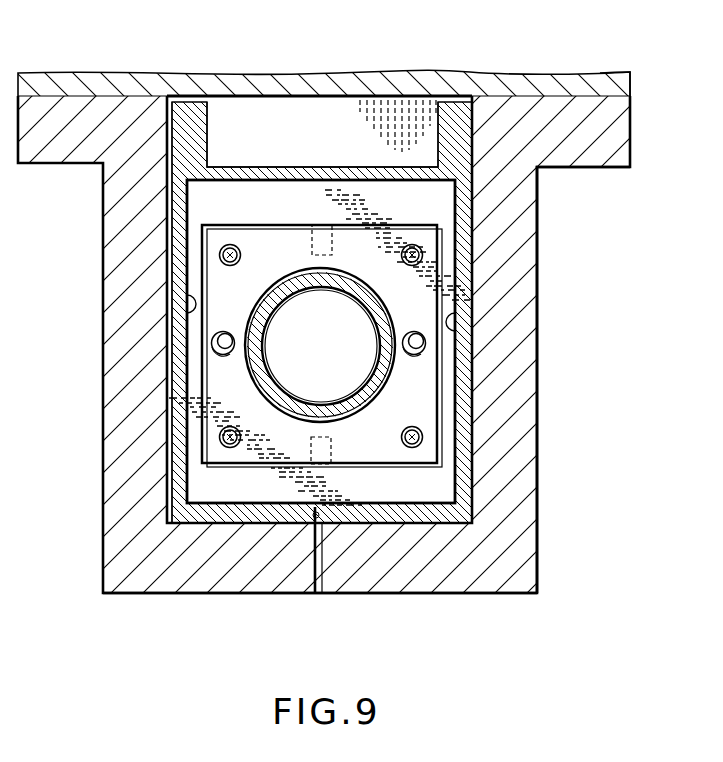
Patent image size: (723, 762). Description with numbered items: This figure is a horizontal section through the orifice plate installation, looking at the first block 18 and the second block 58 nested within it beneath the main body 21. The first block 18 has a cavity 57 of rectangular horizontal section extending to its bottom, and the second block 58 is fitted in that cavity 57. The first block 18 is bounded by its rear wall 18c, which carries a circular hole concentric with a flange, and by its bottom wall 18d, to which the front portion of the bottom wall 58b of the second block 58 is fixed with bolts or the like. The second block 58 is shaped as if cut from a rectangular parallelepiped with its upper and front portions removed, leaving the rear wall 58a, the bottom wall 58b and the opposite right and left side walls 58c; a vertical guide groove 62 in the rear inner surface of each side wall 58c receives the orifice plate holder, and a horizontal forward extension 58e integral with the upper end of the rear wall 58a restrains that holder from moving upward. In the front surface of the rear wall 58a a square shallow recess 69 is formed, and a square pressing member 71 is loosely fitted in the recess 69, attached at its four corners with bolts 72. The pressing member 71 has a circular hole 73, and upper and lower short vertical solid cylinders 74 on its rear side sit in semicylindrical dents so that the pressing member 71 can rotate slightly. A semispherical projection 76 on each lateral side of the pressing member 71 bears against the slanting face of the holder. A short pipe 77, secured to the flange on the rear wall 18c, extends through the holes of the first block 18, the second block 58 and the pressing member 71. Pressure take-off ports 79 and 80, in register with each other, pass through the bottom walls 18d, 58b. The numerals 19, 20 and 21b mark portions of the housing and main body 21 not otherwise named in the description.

The first block 18 is at (220, 582).
The rear wall 18c is at (382, 110).
The bottom wall 18d is at (427, 580).
The housing body 19 is at (617, 136).
The cover plate corner 20 is at (633, 73).
The main body 21 is at (557, 78).
The cover plate lower surface 21b is at (508, 80).
The cavity 57 is at (165, 485).
The second block 58 is at (225, 517).
The rear wall 58a is at (208, 207).
The bottom wall 58b is at (397, 517).
The side walls 58c is at (175, 248).
The horizontal forward extension 58e is at (278, 173).
The vertical guide groove 62 is at (186, 312).
The square shallow recess 69 is at (437, 462).
The pressing member 71 is at (422, 390).
The bolts 72 is at (220, 260).
The circular hole 73 is at (268, 384).
The short vertical solid cylinders 74 is at (333, 250).
The semispherical projection 76 is at (211, 339).
The short pipe 77 is at (328, 283).
The pressure take-off port 79 is at (322, 567).
The pressure take-off port 80 is at (314, 512).